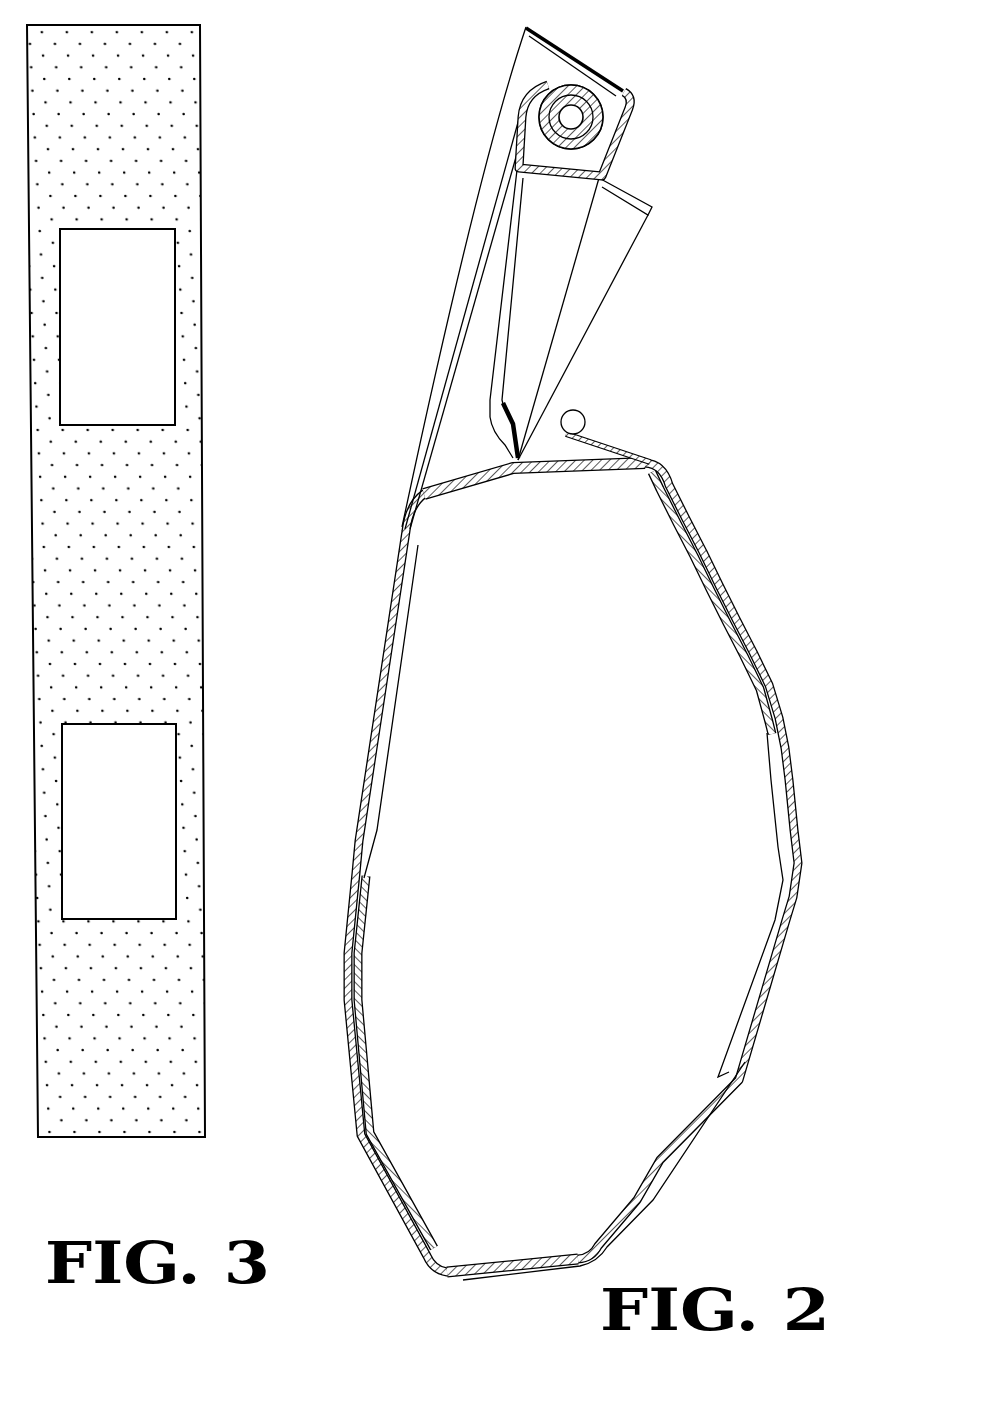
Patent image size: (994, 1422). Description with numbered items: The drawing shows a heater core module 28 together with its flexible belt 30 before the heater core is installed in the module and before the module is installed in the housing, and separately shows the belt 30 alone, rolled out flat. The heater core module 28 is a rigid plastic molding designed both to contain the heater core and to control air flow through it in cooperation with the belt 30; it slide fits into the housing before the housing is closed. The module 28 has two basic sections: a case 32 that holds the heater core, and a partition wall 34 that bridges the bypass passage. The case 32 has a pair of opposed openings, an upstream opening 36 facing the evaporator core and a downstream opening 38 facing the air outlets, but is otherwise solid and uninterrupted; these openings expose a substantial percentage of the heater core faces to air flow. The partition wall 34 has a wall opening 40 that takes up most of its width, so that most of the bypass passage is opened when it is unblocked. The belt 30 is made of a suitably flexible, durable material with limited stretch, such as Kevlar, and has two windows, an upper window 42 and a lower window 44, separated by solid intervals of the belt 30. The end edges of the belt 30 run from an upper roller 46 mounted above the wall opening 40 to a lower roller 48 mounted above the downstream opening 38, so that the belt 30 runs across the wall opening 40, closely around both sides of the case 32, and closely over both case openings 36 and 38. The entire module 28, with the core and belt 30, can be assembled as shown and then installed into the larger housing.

In FIG. 2, the heater core module 28 is at (639, 108).
In FIG. 2, the flexible belt 30 is at (583, 653).
In FIG. 3, the flexible belt 30 is at (202, 67).
In FIG. 2, the case 32 is at (690, 522).
In FIG. 2, the partition wall 34 is at (620, 134).
In FIG. 2, the upstream opening 36 is at (353, 850).
In FIG. 2, the downstream opening 38 is at (788, 743).
In FIG. 2, the wall opening 40 is at (513, 196).
In FIG. 2, the upper window 42 is at (406, 500).
In FIG. 3, the upper window 42 is at (142, 230).
In FIG. 2, the lower window 44 is at (710, 1117).
In FIG. 3, the lower window 44 is at (153, 743).
In FIG. 2, the upper roller 46 is at (572, 116).
In FIG. 2, the lower roller 48 is at (582, 412).